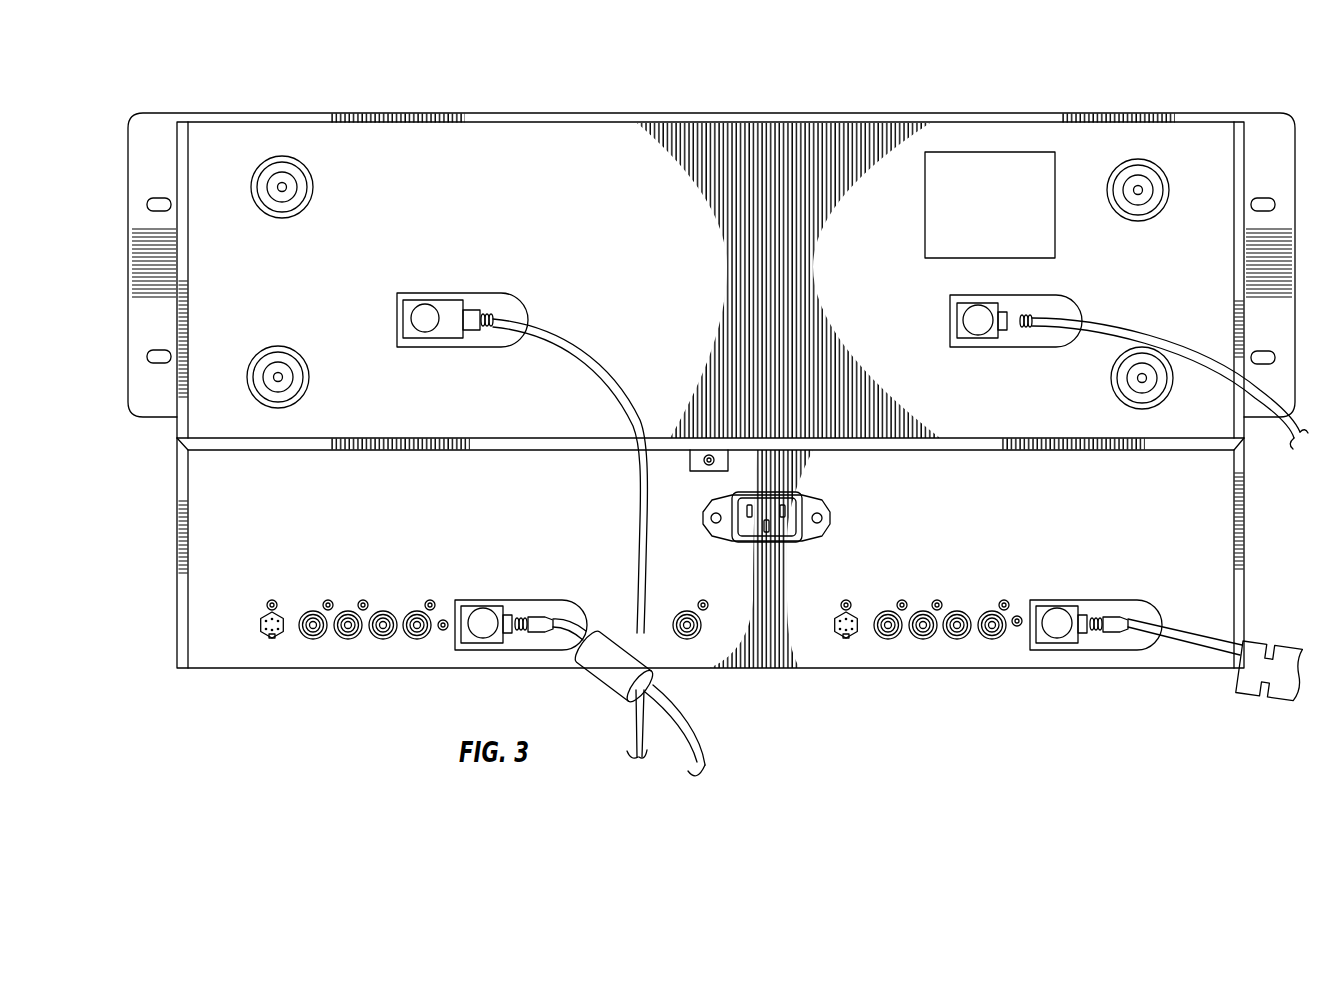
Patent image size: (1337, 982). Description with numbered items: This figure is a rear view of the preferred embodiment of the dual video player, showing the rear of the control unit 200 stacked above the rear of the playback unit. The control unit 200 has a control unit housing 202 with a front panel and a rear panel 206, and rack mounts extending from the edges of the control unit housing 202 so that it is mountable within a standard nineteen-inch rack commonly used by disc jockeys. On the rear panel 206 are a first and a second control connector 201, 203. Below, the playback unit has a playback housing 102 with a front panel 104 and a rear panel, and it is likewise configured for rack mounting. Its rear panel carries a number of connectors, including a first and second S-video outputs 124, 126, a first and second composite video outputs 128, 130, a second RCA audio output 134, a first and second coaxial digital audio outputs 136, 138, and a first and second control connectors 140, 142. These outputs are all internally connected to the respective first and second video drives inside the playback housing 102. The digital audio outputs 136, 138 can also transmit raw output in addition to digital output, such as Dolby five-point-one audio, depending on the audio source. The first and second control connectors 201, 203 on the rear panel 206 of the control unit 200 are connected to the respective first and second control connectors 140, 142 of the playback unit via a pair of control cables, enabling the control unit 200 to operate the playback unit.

The control unit 200 is at (972, 106).
The control unit housing 202 is at (730, 112).
The rear panel 206 is at (546, 140).
The first control connector 201 is at (423, 310).
The second control connector 203 is at (975, 312).
The playback housing 102 is at (985, 670).
The front panel 104 is at (745, 650).
The first S-video output 124 is at (272, 640).
The second S-video output 126 is at (835, 638).
The first composite video output 128 is at (313, 640).
The second composite video output 130 is at (383, 640).
The second RCA audio output 134 is at (923, 640).
The first coaxial digital audio output 136 is at (417, 620).
The second coaxial digital audio output 138 is at (992, 640).
The first control connector 140 is at (483, 640).
The second control connector 142 is at (1057, 640).